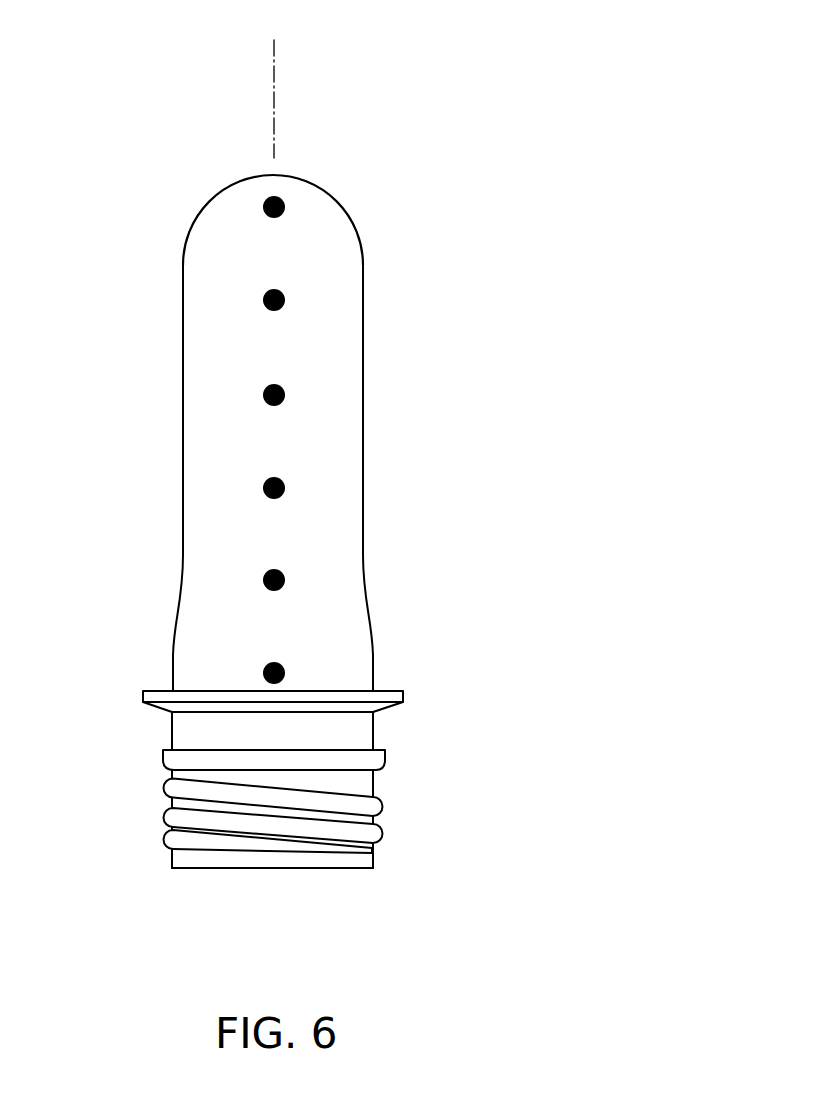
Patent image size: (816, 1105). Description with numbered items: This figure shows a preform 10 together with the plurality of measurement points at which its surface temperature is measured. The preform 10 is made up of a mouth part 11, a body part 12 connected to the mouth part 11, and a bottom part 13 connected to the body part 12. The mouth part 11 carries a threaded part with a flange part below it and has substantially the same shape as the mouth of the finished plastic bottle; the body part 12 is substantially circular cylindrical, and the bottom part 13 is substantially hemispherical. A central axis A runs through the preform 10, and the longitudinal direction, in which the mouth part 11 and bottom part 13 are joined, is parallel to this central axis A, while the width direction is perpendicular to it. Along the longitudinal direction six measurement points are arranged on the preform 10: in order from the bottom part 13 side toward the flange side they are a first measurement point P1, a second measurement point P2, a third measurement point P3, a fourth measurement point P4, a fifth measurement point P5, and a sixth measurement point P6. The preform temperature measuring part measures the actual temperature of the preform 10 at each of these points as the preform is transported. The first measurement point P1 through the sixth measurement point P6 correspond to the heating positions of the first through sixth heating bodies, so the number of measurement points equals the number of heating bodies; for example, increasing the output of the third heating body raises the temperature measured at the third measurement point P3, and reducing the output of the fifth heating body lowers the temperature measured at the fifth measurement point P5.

The preform 10 is at (344, 127).
The mouth part 11 is at (177, 803).
The body part 12 is at (207, 451).
The bottom part 13 is at (213, 198).
The central axis A is at (274, 64).
The first measurement point P1 is at (285, 203).
The second measurement point P2 is at (285, 295).
The third measurement point P3 is at (285, 390).
The fourth measurement point P4 is at (285, 483).
The fifth measurement point P5 is at (285, 575).
The sixth measurement point P6 is at (285, 668).